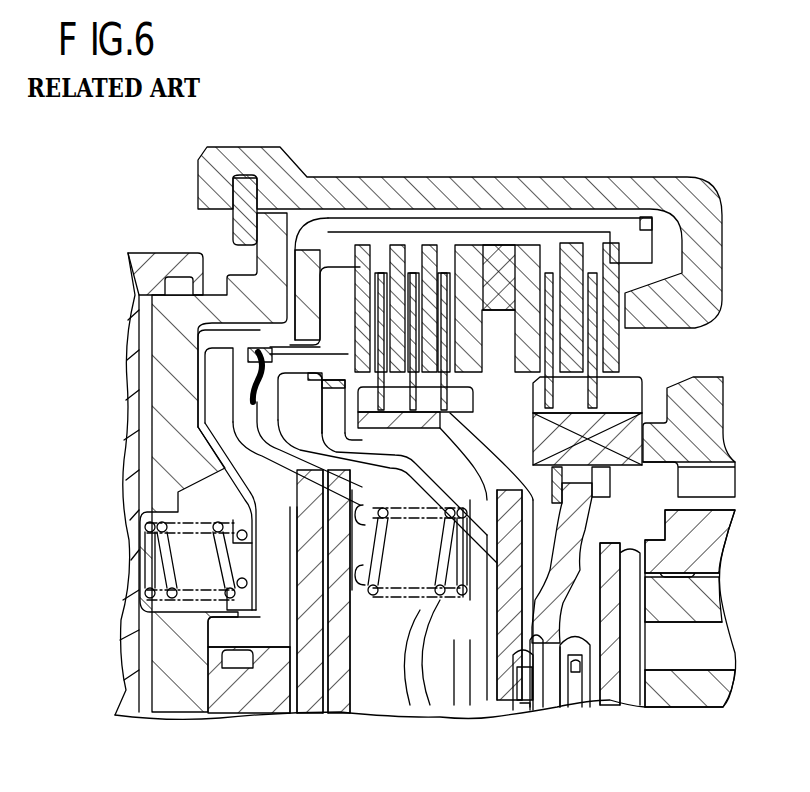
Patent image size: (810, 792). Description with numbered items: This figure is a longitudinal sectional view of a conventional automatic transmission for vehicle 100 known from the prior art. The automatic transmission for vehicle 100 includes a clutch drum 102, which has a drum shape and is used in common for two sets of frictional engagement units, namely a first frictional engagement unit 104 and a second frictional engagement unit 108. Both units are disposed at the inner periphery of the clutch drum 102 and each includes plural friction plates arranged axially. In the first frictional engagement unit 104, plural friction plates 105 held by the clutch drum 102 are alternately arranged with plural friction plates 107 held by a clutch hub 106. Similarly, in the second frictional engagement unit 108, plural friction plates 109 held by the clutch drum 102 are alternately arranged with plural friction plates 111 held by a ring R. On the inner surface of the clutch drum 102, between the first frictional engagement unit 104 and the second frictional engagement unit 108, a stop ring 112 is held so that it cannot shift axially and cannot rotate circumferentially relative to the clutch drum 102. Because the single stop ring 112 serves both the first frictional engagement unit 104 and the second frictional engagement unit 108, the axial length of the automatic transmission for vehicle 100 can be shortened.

The automatic transmission for vehicle 100 is at (528, 78).
The clutch drum 102 is at (474, 216).
The first frictional engagement unit 104 is at (407, 237).
The friction plates 105 is at (362, 250).
The clutch hub 106 is at (480, 443).
The friction plates 107 is at (443, 350).
The second frictional engagement unit 108 is at (573, 232).
The friction plates 109 is at (576, 263).
The friction plates 111 is at (598, 352).
The stop ring 112 is at (497, 262).
The ring R is at (633, 414).